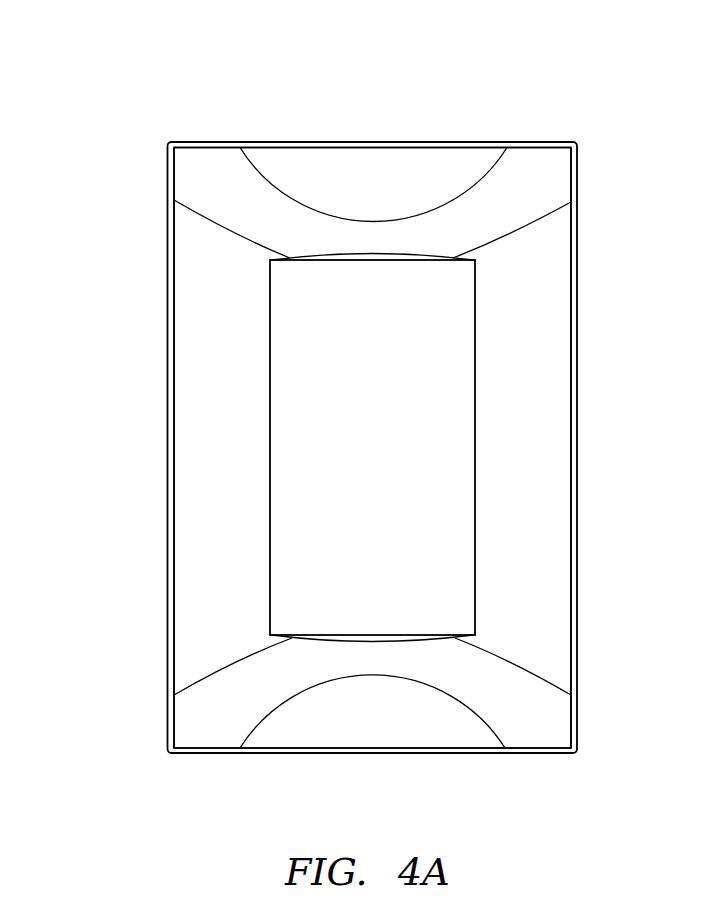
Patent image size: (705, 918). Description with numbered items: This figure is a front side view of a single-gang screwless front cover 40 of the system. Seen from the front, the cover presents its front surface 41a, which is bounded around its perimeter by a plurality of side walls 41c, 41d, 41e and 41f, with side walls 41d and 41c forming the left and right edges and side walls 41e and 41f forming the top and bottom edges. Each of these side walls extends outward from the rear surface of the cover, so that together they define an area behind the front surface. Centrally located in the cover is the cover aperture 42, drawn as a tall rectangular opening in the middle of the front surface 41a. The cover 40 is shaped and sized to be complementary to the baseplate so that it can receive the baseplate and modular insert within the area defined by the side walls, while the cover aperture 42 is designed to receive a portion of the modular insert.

The single-gang screwless front cover 40 is at (139, 119).
The front surface 41a is at (391, 180).
The side wall 41c is at (577, 415).
The side wall 41d is at (168, 417).
The side wall 41e is at (275, 142).
The side wall 41f is at (378, 753).
The cover aperture 42 is at (394, 463).